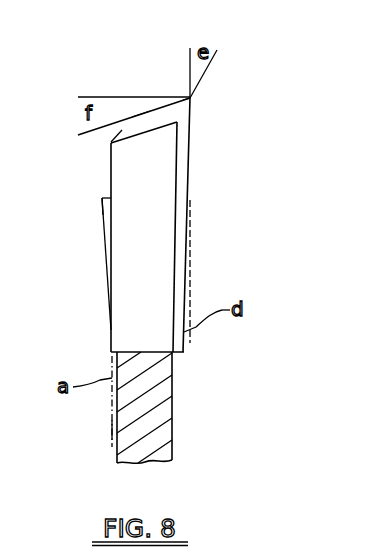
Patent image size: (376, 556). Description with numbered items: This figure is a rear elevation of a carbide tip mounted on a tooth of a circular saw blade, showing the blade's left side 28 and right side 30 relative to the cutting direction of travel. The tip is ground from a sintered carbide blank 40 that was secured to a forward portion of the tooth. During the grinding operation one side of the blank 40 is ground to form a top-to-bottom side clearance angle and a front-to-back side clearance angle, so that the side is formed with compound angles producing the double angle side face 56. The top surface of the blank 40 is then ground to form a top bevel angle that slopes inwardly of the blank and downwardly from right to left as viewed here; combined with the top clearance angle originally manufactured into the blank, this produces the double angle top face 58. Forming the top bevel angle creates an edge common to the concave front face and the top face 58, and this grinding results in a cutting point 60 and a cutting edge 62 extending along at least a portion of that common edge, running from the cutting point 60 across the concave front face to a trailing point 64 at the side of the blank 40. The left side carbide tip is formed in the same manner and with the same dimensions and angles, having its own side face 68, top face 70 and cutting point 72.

The left side 28 is at (112, 430).
The right side 30 is at (172, 415).
The sintered carbide blank 40 is at (111, 333).
The double angle side face 56 is at (180, 175).
The double angle top face 58 is at (112, 136).
The cutting point 60 is at (191, 99).
The cutting edge 62 is at (141, 113).
The trailing point 64 is at (111, 143).
The side face 68 is at (104, 245).
The top face 70 is at (107, 197).
The cutting point 72 is at (102, 198).